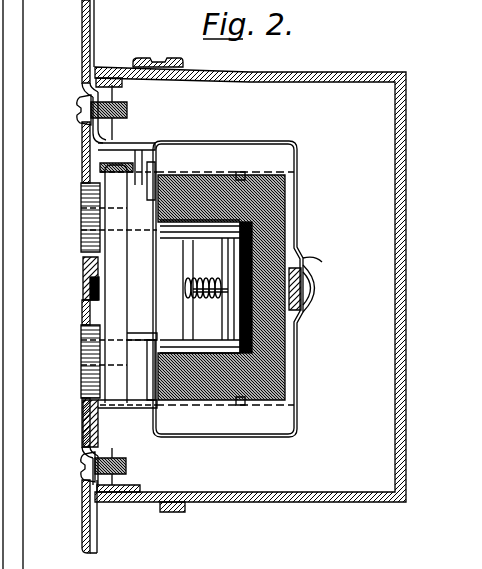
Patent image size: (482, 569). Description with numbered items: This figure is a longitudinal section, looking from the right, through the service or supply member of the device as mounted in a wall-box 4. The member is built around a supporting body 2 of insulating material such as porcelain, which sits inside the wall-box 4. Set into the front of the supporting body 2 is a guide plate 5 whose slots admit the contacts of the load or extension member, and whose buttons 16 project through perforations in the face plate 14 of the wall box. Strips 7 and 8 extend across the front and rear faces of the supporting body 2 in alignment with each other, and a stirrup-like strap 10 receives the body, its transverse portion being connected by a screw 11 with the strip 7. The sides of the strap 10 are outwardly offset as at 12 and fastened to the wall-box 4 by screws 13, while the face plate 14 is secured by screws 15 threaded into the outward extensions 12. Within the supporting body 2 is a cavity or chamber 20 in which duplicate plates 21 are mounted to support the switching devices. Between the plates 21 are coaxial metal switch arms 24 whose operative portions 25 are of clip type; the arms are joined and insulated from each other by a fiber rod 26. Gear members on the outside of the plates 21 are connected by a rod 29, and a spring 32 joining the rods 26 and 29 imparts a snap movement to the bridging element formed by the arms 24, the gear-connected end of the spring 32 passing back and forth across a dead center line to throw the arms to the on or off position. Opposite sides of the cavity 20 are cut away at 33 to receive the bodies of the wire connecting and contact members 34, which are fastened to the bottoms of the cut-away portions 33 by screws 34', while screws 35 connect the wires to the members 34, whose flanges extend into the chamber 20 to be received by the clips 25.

The supporting body 2 is at (300, 208).
The wall-box 4 is at (300, 71).
The guide plate 5 is at (114, 268).
The strip 7 is at (318, 262).
The strip 8 is at (84, 292).
The stirrup-like strap 10 is at (297, 361).
The screw 11 is at (320, 297).
The outwardly offset portion 12 is at (112, 133).
The screw 13 is at (80, 78).
The face plate 14 is at (82, 148).
The screw 15 is at (128, 110).
The button 16 is at (83, 246).
The cavity or chamber 20 is at (213, 405).
The plate 21 is at (184, 291).
The switch arm 24 is at (218, 173).
The operative portion 25 is at (288, 238).
The rod 26 is at (326, 254).
The rod 29 is at (192, 248).
The spring 32 is at (196, 305).
The cut away portion 33 is at (105, 155).
The wire connecting and contact member 34 is at (118, 297).
The screw 34' is at (260, 290).
The screw 35 is at (100, 200).